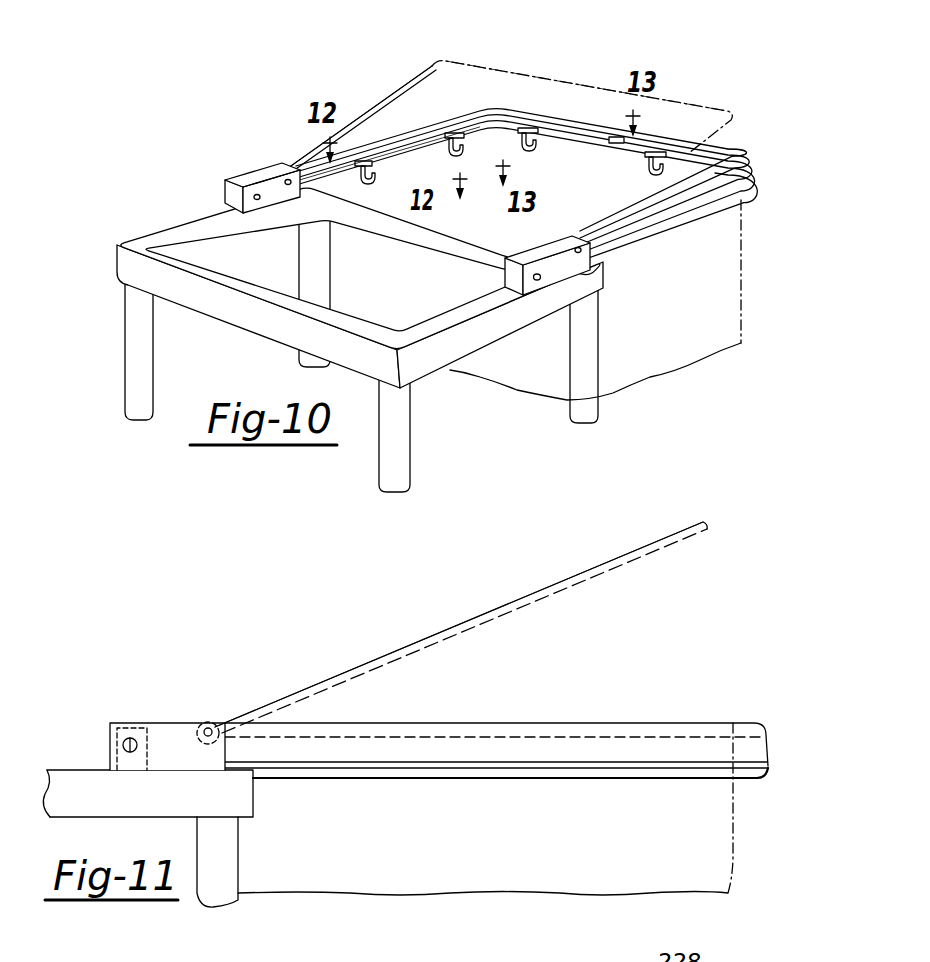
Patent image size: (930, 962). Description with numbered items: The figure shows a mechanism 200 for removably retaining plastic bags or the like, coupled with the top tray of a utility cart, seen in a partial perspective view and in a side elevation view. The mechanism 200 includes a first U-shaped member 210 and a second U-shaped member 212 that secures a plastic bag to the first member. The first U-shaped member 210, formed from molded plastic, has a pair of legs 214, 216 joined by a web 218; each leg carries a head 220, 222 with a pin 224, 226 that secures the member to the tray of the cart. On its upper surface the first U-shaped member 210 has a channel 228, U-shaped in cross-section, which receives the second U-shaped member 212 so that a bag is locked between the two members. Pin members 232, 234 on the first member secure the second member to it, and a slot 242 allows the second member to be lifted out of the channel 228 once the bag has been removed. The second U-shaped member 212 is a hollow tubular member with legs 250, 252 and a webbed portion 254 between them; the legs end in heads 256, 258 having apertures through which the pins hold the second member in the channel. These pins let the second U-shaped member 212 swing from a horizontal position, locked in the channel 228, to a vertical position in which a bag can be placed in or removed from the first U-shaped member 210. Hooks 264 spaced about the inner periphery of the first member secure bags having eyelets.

In FIG. 10, the mechanism 200 is at (297, 107).
In FIG. 11, the mechanism 200 is at (148, 838).
In FIG. 10, the first U-shaped member 210 is at (762, 169).
In FIG. 11, the first U-shaped member 210 is at (485, 809).
In FIG. 10, the second U-shaped member 212 is at (510, 93).
In FIG. 11, the second U-shaped member 212 is at (477, 627).
In FIG. 10, the leg 214 is at (546, 195).
In FIG. 11, the leg 214 is at (496, 737).
In FIG. 10, the leg 216 is at (478, 133).
In FIG. 10, the web 218 is at (596, 136).
In FIG. 10, the head 220 is at (539, 328).
In FIG. 11, the head 220 is at (187, 694).
In FIG. 10, the head 222 is at (203, 167).
In FIG. 10, the pin 224 is at (535, 282).
In FIG. 11, the pin 224 is at (128, 738).
In FIG. 10, the pin 226 is at (253, 197).
In FIG. 10, the channel 228 is at (737, 146).
In FIG. 11, the channel 228 is at (620, 736).
In FIG. 10, the pin member 232 is at (580, 254).
In FIG. 11, the pin member 232 is at (214, 728).
In FIG. 10, the pin member 234 is at (281, 162).
In FIG. 10, the slot 242 is at (613, 152).
In FIG. 10, the leg 250 is at (674, 170).
In FIG. 11, the leg 250 is at (614, 572).
In FIG. 10, the leg 252 is at (347, 120).
In FIG. 10, the webbed portion 254 is at (572, 86).
In FIG. 11, the head 256 is at (203, 716).
In FIG. 10, the head 258 is at (272, 167).
In FIG. 10, the hooks 264 is at (513, 142).